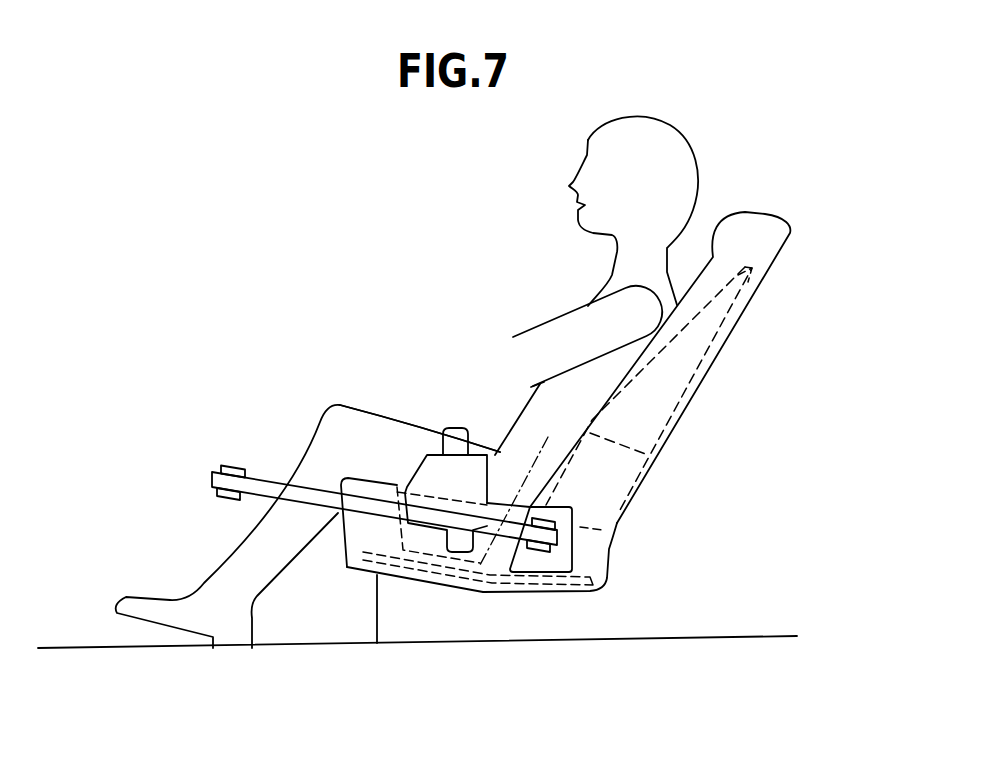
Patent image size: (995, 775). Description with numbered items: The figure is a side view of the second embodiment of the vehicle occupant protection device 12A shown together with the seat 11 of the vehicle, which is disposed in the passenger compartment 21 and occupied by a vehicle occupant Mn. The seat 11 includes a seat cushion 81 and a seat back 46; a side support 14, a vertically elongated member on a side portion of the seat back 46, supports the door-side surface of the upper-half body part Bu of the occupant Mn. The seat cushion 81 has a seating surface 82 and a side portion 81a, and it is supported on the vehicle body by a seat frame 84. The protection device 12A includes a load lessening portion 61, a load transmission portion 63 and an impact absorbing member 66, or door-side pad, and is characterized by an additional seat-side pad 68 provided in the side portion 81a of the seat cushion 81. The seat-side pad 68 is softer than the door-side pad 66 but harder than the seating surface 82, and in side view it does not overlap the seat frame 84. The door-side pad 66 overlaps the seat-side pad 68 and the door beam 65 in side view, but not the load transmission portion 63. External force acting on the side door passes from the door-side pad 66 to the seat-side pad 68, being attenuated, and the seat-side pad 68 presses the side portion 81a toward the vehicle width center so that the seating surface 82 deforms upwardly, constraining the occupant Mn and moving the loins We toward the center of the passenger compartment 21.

The seat 11 is at (545, 470).
The vehicle occupant protection device 12A is at (737, 300).
The side support 14 is at (728, 313).
The seat back 46 is at (728, 345).
The seat cushion 81 is at (613, 550).
The side portion of the seat cushion 81a is at (353, 535).
The seat frame 84 is at (607, 585).
The seating surface 82 is at (378, 478).
The load transmission portion 63 is at (525, 565).
The load lessening portion 61 is at (600, 530).
The impact absorbing member 66 is at (458, 428).
The seat-side pad 68 is at (519, 492).
The door beam 65 is at (268, 472).
The passenger compartment 21 is at (106, 592).
The vehicle occupant Mn is at (579, 292).
The upper-half body part Bu is at (588, 380).
The loins We is at (505, 463).